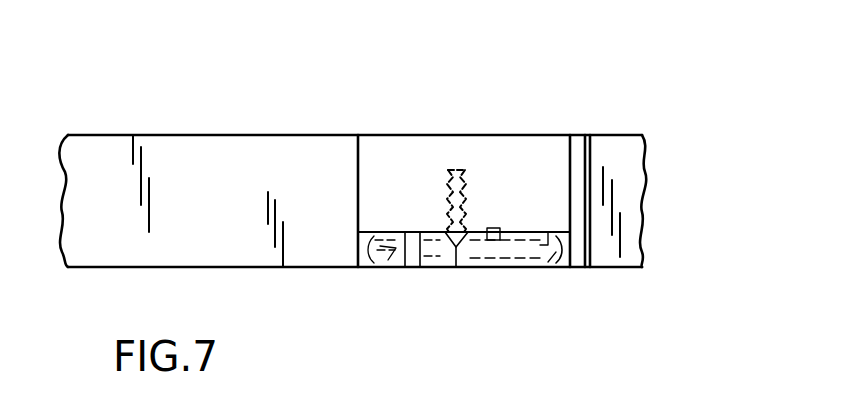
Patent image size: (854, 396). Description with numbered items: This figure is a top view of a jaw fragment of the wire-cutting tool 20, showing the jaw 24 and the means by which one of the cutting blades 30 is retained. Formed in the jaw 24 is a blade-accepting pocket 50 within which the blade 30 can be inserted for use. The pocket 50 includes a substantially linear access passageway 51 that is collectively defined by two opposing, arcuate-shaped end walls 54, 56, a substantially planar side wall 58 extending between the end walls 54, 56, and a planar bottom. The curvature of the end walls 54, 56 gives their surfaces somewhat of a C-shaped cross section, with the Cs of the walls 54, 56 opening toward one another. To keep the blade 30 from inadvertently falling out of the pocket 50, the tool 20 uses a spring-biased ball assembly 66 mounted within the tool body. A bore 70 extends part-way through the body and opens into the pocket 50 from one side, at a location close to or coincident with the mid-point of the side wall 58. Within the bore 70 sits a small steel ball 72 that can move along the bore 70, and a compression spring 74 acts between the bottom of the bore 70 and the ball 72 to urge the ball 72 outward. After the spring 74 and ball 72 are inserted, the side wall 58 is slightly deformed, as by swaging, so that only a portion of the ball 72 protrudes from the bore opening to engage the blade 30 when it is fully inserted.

The tool 20 is at (655, 108).
The jaw portion 24 is at (183, 173).
The cutting blade 30 is at (513, 268).
The blade-accepting pocket 50 is at (405, 267).
The access passageway 51 is at (547, 243).
The end wall 54 is at (388, 260).
The end wall 56 is at (548, 268).
The side wall 58 is at (487, 238).
The spring-biased ball assembly 66 is at (455, 170).
The bore 70 is at (445, 198).
The steel ball 72 is at (457, 268).
The compression spring 74 is at (447, 180).